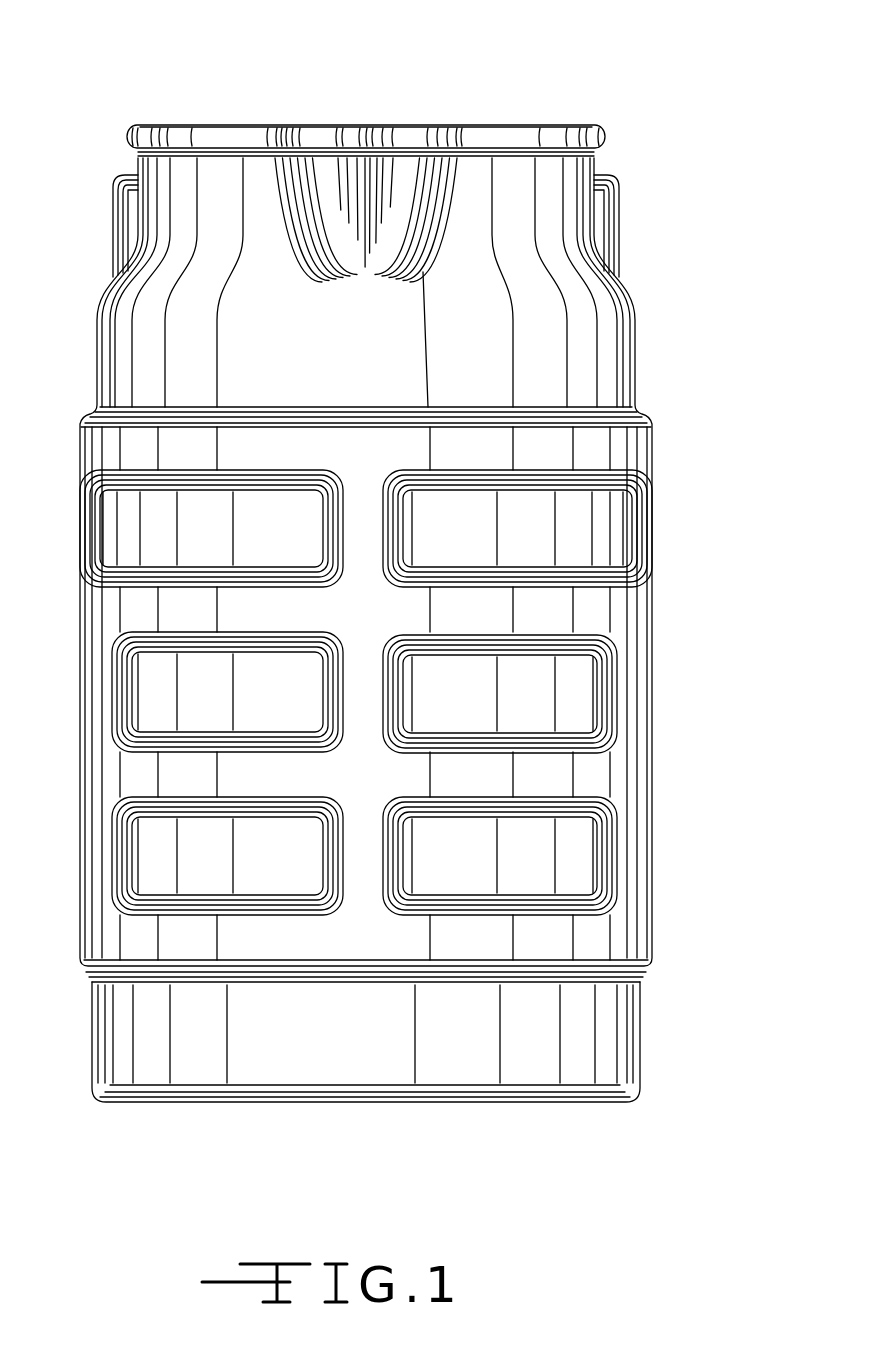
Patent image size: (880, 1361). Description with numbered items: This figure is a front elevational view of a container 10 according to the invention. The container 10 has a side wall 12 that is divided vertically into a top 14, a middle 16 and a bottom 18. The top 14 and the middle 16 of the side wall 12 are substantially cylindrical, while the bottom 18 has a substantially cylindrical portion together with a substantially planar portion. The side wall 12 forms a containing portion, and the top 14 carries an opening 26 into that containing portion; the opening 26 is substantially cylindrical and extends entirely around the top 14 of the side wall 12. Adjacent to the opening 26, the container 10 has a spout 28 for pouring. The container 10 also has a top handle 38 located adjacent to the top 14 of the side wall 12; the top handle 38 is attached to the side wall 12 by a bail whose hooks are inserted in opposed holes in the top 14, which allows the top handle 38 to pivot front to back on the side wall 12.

The container 10 is at (510, 93).
The side wall 12 is at (637, 375).
The top 14 is at (607, 138).
The middle 16 is at (655, 724).
The bottom 18 is at (640, 1036).
The opening 26 is at (152, 125).
The spout 28 is at (373, 133).
The top handle 38 is at (619, 233).